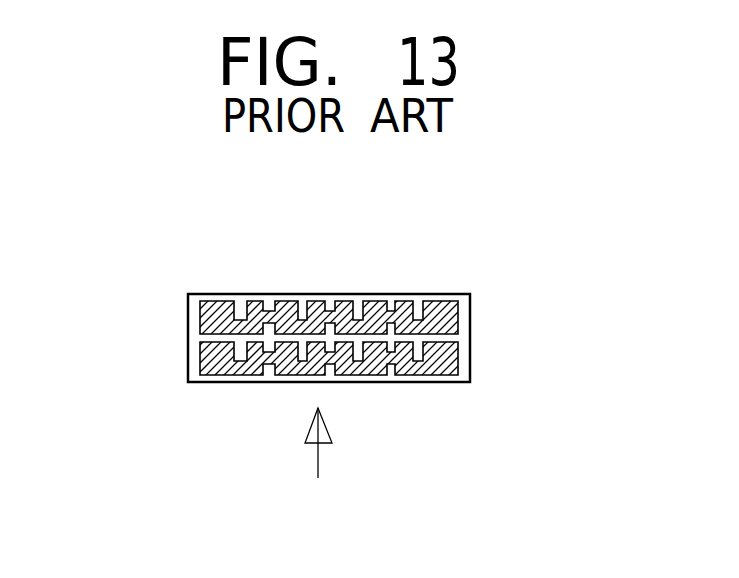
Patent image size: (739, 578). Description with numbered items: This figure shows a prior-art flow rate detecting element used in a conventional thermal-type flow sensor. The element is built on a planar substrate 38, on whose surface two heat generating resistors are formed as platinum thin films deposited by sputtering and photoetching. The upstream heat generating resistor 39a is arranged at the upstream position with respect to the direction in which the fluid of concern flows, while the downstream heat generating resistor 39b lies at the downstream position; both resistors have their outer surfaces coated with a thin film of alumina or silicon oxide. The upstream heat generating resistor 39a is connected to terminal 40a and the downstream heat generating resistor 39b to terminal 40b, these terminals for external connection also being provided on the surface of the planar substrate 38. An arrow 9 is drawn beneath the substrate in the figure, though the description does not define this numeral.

The planar substrate 38 is at (338, 295).
The upstream heat generating resistor 39a is at (283, 366).
The downstream heat generating resistor 39b is at (282, 315).
The terminal 40a is at (321, 375).
The terminal 40b is at (321, 292).
The direction arrow 9 is at (317, 457).